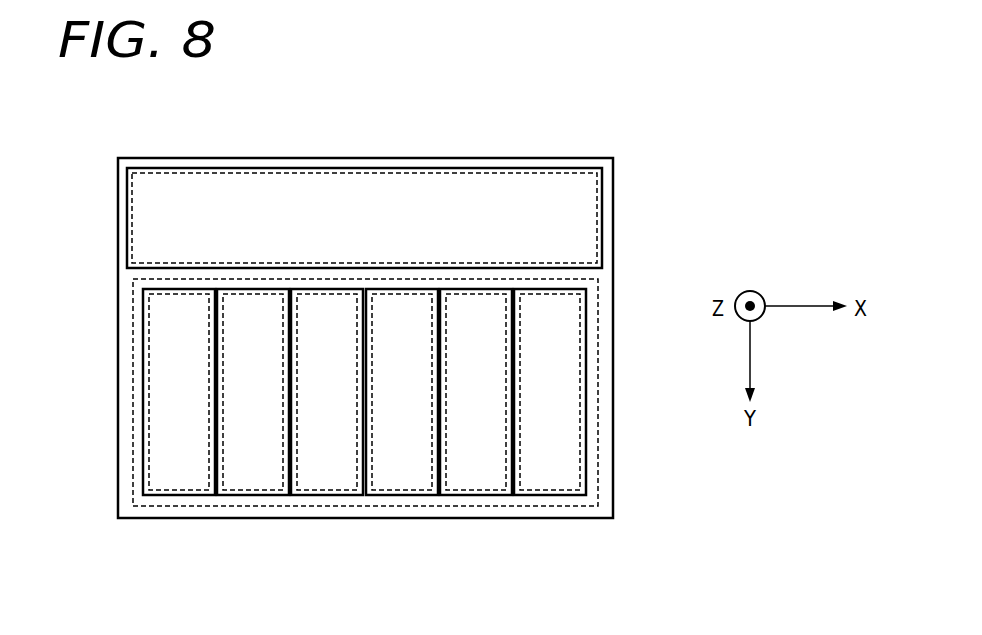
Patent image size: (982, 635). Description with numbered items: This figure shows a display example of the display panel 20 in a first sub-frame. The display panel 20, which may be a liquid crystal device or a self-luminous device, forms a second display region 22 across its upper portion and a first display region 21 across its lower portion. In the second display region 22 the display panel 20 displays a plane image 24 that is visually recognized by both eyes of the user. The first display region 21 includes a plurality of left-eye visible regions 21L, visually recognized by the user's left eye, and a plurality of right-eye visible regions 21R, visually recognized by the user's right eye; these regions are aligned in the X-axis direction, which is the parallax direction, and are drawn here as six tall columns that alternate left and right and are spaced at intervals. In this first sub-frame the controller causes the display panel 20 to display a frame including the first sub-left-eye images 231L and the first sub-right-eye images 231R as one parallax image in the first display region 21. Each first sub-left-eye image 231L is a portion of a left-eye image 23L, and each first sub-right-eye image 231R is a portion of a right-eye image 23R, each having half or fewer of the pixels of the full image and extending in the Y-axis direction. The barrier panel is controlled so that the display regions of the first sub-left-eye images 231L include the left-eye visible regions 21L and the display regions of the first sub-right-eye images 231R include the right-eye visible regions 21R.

The display panel 20 is at (277, 155).
The plane image 24 is at (514, 168).
The second display region 22 is at (573, 218).
The first display region 21 is at (599, 393).
The left-eye visible region 21L is at (168, 477).
The right-eye visible region 21R is at (242, 477).
The first sub-left-eye image 231L is at (331, 456).
The first sub-right-eye image 231R is at (412, 456).
The left-eye image 23L is at (492, 495).
The right-eye image 23R is at (572, 495).